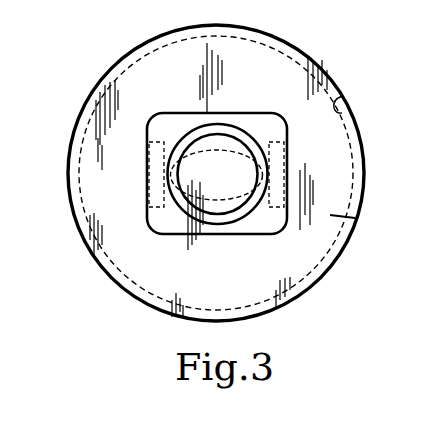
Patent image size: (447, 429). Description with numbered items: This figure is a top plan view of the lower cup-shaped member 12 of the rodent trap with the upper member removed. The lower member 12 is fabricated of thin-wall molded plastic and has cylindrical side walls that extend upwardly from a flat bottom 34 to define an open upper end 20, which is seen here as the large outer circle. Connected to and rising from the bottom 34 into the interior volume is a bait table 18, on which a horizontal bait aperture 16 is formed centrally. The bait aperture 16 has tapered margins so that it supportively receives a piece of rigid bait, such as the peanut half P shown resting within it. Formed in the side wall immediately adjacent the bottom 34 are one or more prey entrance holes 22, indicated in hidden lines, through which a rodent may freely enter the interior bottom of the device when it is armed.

The lower cup-shaped member 12 is at (364, 146).
The bait aperture 16 is at (168, 203).
The bait table 18 is at (260, 220).
The open upper end 20 is at (342, 96).
The prey entrance holes 22 is at (343, 259).
The flat bottom 34 is at (356, 222).
The peanut half P is at (232, 150).